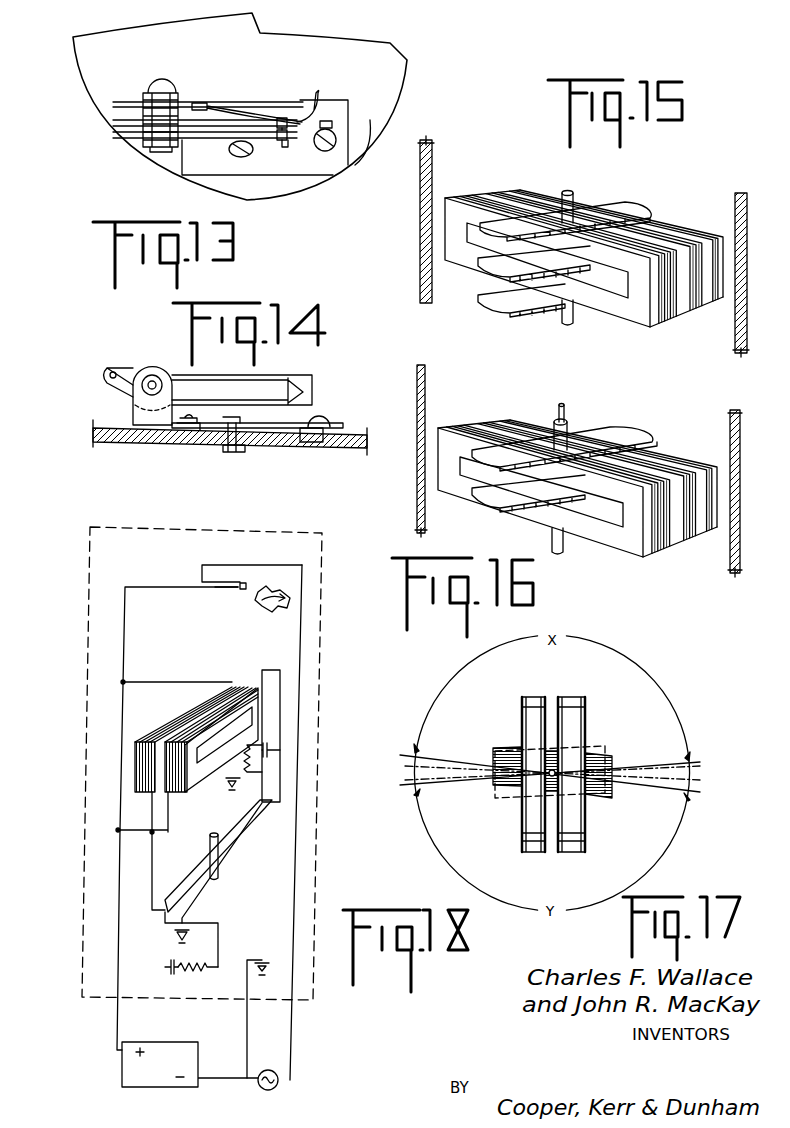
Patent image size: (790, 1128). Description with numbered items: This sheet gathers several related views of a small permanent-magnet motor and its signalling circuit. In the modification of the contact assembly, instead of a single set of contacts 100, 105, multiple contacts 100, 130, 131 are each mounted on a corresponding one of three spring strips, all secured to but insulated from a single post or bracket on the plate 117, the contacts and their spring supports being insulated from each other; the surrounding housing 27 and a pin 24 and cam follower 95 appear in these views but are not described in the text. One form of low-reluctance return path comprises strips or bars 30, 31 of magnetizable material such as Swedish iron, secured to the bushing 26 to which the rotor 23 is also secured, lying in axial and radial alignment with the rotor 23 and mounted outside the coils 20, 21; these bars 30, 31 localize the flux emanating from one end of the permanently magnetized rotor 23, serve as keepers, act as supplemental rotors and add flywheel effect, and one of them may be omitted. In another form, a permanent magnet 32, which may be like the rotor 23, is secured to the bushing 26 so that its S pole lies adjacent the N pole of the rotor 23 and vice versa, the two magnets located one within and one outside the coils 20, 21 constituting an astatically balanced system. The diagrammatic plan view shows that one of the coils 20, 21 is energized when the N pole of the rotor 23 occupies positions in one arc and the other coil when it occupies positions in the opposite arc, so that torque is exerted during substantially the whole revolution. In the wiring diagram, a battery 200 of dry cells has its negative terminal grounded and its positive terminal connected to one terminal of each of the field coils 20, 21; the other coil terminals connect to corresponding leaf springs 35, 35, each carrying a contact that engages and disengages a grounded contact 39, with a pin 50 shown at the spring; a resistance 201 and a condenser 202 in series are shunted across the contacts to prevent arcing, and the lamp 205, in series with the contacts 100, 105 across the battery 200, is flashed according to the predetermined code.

In FIG. 15, the field coil 20 is at (661, 313).
In FIG. 16, the field coil 20 is at (655, 543).
In FIG. 17, the field coil 20 is at (530, 713).
In FIG. 18, the field coil 20 is at (255, 687).
In FIG. 15, the field coil 21 is at (677, 237).
In FIG. 16, the field coil 21 is at (703, 530).
In FIG. 17, the field coil 21 is at (572, 725).
In FIG. 18, the field coil 21 is at (143, 767).
In FIG. 15, the rotor 23 is at (490, 268).
In FIG. 16, the rotor 23 is at (492, 503).
In FIG. 17, the rotor 23 is at (602, 762).
In FIG. 16, the pin 24 is at (563, 407).
In FIG. 15, the bushing 26 is at (573, 198).
In FIG. 16, the bushing 26 is at (568, 429).
In FIG. 13, the housing 27 is at (356, 156).
In FIG. 15, the strip or bar 30 is at (625, 213).
In FIG. 15, the strip or bar 31 is at (507, 298).
In FIG. 16, the permanent magnet 32 is at (620, 437).
In FIG. 18, the leaf spring 35 is at (248, 827).
In FIG. 18, the contact 39 is at (226, 821).
In FIG. 18, the pin 50 is at (220, 870).
In FIG. 18, the contact 95 is at (277, 599).
In FIG. 13, the contact 100 is at (237, 110).
In FIG. 18, the contact 100 is at (218, 592).
In FIG. 18, the contact 105 is at (246, 585).
In FIG. 13, the plate 117 is at (313, 162).
In FIG. 13, the contact 130 is at (287, 123).
In FIG. 13, the contact 131 is at (287, 142).
In FIG. 18, the battery 200 is at (140, 1072).
In FIG. 18, the resistance 201 is at (250, 768).
In FIG. 18, the condenser 202 is at (268, 746).
In FIG. 18, the lamp 205 is at (277, 1089).